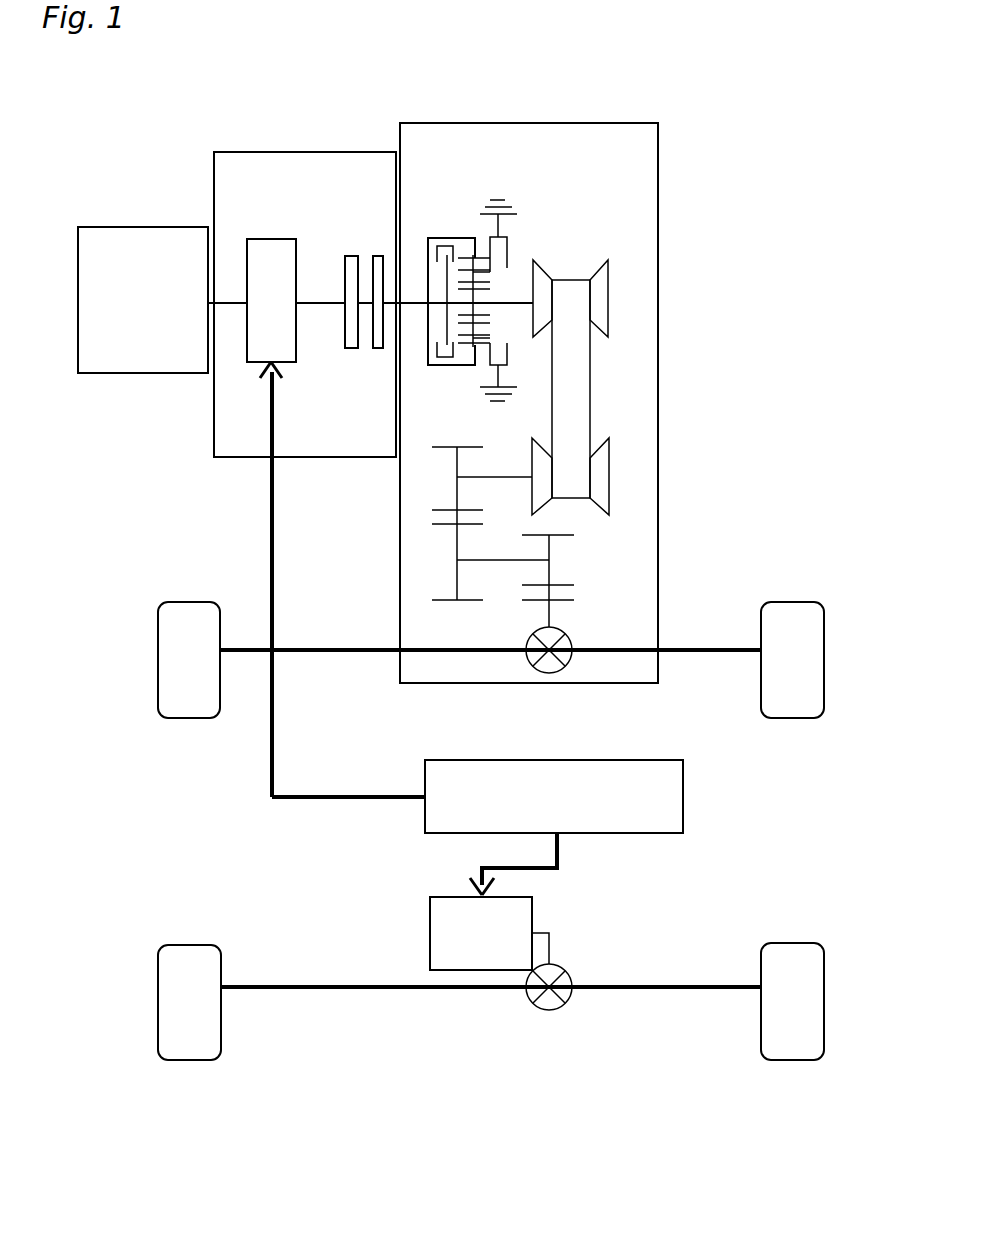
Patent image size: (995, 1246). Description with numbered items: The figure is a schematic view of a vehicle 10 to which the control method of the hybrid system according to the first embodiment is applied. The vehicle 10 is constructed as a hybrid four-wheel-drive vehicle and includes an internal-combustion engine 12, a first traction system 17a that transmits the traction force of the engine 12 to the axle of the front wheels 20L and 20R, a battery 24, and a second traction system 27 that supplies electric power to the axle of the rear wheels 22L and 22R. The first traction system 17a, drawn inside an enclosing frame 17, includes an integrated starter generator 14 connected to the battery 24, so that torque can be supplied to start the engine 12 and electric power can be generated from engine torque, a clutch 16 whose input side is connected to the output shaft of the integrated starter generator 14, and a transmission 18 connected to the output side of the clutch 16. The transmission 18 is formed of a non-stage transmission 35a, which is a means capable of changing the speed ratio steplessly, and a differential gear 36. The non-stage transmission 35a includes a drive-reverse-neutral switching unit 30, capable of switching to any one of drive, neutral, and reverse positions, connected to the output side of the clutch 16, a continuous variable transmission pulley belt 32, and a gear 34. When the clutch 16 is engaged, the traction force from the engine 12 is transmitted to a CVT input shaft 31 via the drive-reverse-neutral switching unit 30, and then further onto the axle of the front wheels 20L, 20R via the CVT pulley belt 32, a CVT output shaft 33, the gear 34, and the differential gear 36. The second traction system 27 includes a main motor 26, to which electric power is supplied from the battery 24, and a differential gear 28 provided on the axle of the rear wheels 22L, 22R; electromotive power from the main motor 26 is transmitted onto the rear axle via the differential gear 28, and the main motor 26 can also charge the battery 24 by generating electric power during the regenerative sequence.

The vehicle 10 is at (768, 244).
The internal-combustion engine 12 is at (134, 227).
The integrated starter generator 14 is at (270, 239).
The clutch 16 is at (350, 256).
The drive unit 17 is at (305, 304).
The first traction system 17a is at (385, 482).
The transmission 18 is at (658, 148).
The front wheel 20L is at (190, 602).
The front wheel 20R is at (792, 602).
The rear wheel 22L is at (178, 945).
The rear wheel 22R is at (790, 943).
The battery 24 is at (683, 783).
The main motor 26 is at (430, 922).
The second traction system 27 is at (563, 921).
The differential gear 28 is at (549, 1010).
The drive-reverse-neutral switching unit 30 is at (470, 238).
The CVT input shaft 31 is at (508, 302).
The CVT pulley belt 32 is at (566, 280).
The CVT output shaft 33 is at (497, 477).
The gear 34 is at (572, 553).
The non-stage transmission 35a is at (610, 372).
The differential gear 36 is at (567, 634).